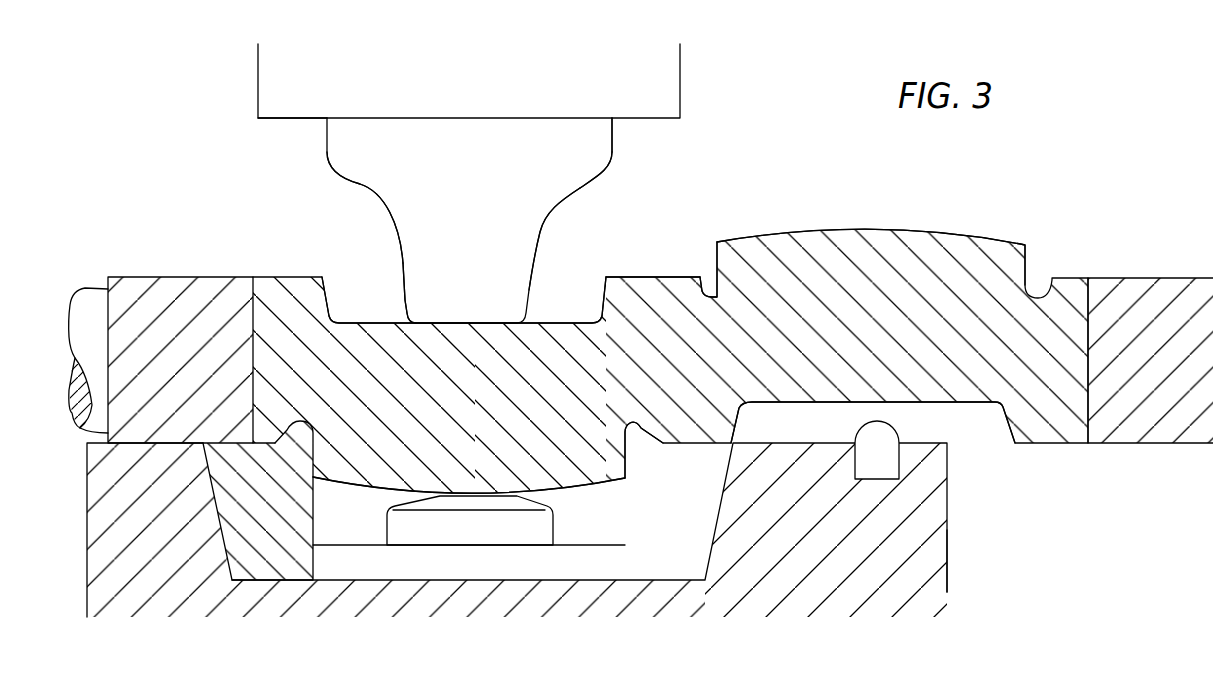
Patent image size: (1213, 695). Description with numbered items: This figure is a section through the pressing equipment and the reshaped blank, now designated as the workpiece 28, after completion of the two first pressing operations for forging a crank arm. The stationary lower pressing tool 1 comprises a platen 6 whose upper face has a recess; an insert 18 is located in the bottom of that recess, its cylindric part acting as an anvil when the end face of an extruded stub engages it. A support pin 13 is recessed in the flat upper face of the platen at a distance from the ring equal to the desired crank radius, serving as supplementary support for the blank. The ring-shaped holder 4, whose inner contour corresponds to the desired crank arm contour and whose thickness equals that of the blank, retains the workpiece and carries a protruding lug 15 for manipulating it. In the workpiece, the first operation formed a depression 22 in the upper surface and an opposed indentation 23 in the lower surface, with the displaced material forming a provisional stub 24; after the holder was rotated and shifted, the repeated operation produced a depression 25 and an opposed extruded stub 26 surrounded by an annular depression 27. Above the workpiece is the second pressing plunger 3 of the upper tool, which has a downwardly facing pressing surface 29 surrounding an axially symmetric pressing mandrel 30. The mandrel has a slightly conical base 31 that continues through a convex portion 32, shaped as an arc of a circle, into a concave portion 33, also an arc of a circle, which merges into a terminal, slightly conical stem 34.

The stationary lower pressing tool 1 is at (948, 512).
The second pressing plunger 3 is at (682, 72).
The ring-shaped holder 4 is at (1140, 293).
The platen 6 is at (930, 555).
The support pin 13 is at (880, 440).
The protruding lug 15 is at (90, 302).
The insert 18 is at (566, 548).
The depression 22 is at (955, 403).
The indentation 23 is at (701, 290).
The provisional stub 24 is at (833, 243).
The depression 25 is at (379, 320).
The extruded stub 26 is at (593, 470).
The annular depression 27 is at (636, 421).
The workpiece 28 is at (634, 292).
The pressing surface 29 is at (284, 119).
The pressing mandrel 30 is at (362, 186).
The conical base 31 is at (600, 139).
The convex portion 32 is at (588, 163).
The concave portion 33 is at (534, 210).
The stem 34 is at (422, 281).